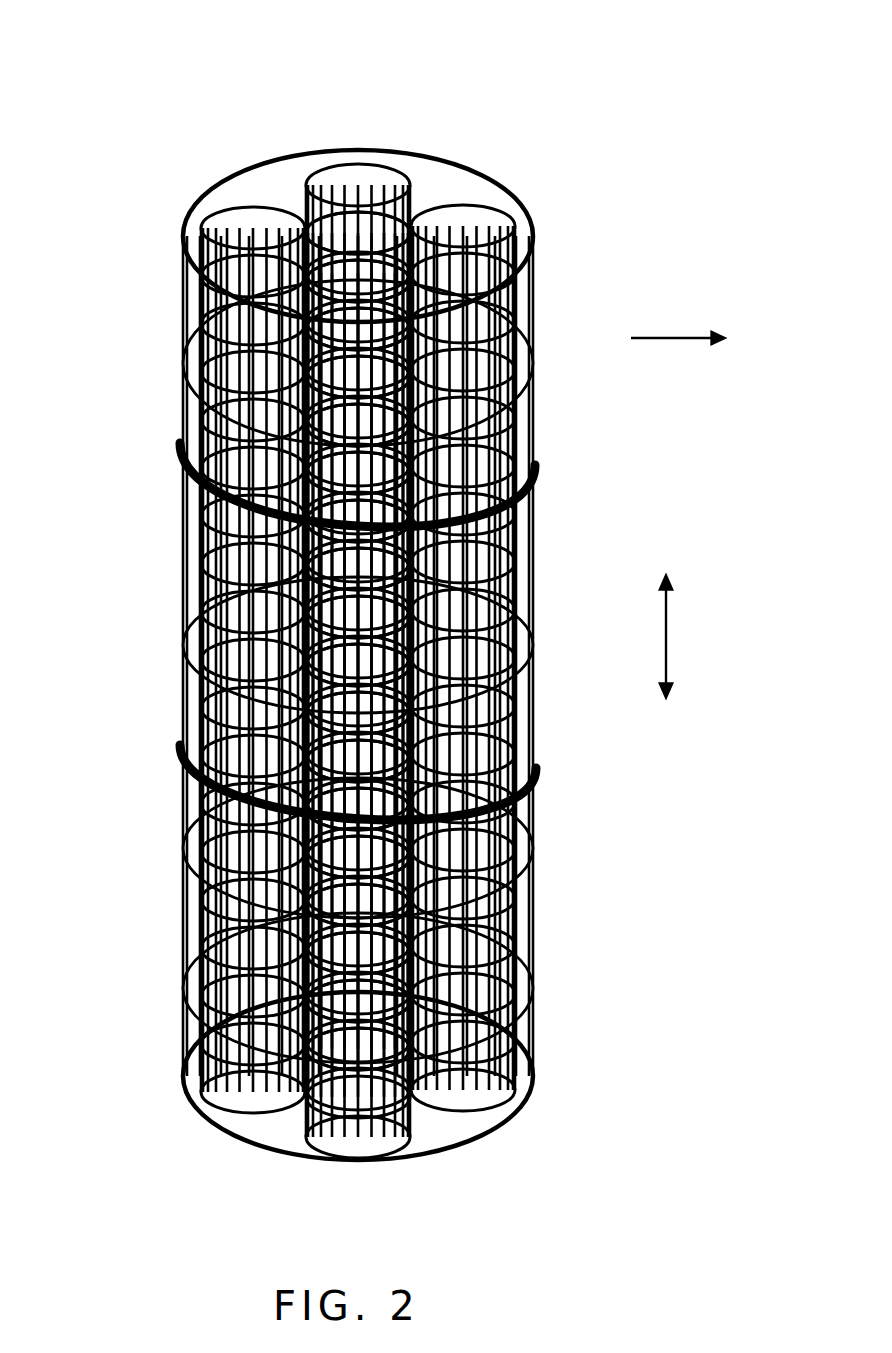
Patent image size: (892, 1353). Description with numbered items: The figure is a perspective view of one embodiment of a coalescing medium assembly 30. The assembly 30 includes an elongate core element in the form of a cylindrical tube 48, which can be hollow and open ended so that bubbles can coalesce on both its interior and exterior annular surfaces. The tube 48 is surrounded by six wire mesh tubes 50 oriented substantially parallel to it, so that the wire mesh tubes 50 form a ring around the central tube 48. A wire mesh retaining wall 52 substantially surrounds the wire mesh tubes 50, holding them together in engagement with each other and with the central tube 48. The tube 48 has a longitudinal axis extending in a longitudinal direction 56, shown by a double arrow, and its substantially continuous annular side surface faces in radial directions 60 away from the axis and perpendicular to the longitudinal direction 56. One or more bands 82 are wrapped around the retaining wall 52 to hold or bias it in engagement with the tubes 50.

The coalescing medium assembly 30 is at (667, 108).
The cylindrical tube 48 is at (368, 240).
The wire mesh tubes 50 is at (460, 163).
The wire mesh retaining wall 52 is at (277, 155).
The longitudinal direction 56 is at (658, 625).
The radial directions 60 is at (667, 330).
The bands 82 is at (178, 737).